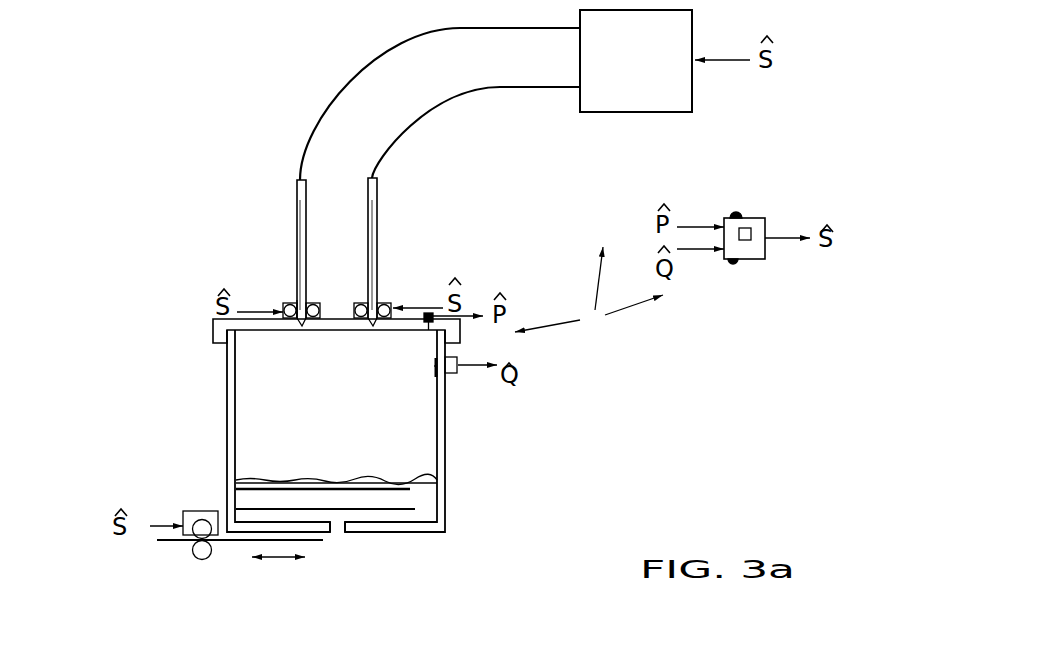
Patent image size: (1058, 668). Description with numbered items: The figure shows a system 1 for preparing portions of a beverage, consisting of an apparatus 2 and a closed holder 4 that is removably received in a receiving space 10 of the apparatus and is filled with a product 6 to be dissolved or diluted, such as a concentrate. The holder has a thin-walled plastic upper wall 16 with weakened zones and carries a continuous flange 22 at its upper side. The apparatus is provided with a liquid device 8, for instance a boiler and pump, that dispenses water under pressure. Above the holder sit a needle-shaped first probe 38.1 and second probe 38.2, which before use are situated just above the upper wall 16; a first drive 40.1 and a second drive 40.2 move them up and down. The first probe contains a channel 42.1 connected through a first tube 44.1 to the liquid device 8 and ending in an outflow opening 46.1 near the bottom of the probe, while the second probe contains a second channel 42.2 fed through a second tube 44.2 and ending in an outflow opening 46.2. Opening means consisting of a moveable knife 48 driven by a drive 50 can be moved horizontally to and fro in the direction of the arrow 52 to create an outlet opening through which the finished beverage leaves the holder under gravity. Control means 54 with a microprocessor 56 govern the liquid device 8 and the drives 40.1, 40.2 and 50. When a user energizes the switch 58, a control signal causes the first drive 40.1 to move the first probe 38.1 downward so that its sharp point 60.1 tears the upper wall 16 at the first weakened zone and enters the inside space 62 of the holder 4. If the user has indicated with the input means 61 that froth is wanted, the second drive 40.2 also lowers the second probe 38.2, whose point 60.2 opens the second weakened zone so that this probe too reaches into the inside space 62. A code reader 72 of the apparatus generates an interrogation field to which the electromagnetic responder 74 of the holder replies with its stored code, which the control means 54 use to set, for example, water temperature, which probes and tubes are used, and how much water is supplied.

The system 1 is at (658, 424).
The apparatus 2 is at (589, 291).
The holder 4 is at (440, 508).
The product 6 is at (398, 499).
The liquid device 8 is at (621, 95).
The receiving space 10 is at (445, 473).
The upper wall 16 is at (262, 330).
The continuous flange 22 is at (345, 532).
The first probe 38.1 is at (297, 198).
The second probe 38.2 is at (378, 215).
The first drive 40.1 is at (282, 308).
The second drive 40.2 is at (392, 303).
The channel 42.1 is at (302, 225).
The second channel 42.2 is at (372, 252).
The first tube 44.1 is at (347, 83).
The second tube 44.2 is at (460, 98).
The outflow opening 46.1 is at (297, 307).
The outflow opening 46.2 is at (434, 366).
The moveable knife 48 is at (227, 543).
The drive 50 is at (198, 512).
The arrow 52 is at (277, 557).
The control means 54 is at (750, 250).
The microprocessor 56 is at (749, 230).
The switch 58 is at (740, 212).
The point 60.1 is at (300, 326).
The point 60.2 is at (373, 326).
The input means 61 is at (733, 262).
The inside space 62 is at (353, 459).
The code reader 72 is at (453, 375).
The electromagnetic responder 74 is at (437, 370).